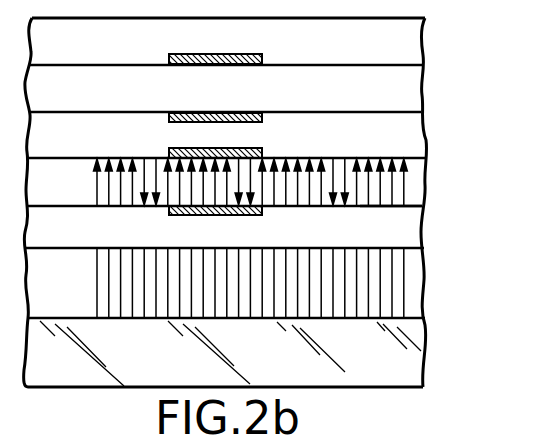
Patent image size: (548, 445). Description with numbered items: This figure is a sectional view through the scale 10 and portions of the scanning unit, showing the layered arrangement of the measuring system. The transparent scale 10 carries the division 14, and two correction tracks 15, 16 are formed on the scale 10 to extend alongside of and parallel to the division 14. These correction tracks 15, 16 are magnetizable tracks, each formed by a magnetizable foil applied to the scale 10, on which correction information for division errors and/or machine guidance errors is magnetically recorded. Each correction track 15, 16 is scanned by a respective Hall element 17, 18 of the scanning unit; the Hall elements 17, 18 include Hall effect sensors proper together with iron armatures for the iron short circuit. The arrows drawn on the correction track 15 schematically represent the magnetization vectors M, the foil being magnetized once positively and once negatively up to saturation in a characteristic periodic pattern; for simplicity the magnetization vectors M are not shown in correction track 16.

The scale 10 is at (405, 358).
The division 14 is at (412, 288).
The correction track 15 is at (424, 170).
The correction track 16 is at (400, 91).
The Hall element 17 is at (262, 153).
The Hall element 18 is at (262, 57).
The magnetization vectors M is at (403, 191).